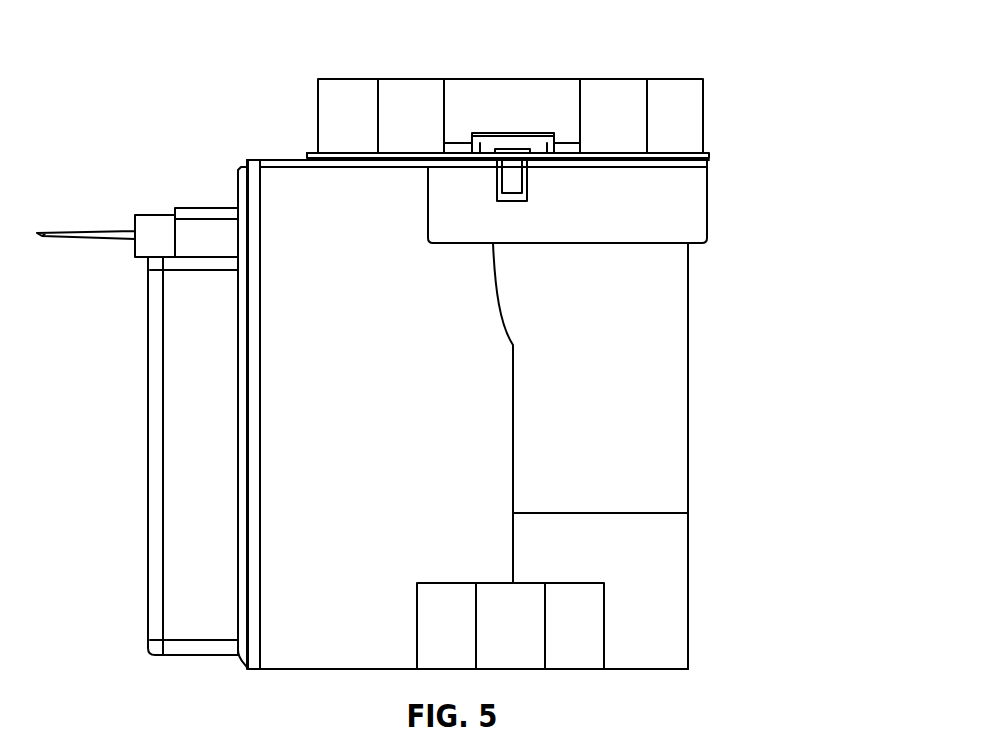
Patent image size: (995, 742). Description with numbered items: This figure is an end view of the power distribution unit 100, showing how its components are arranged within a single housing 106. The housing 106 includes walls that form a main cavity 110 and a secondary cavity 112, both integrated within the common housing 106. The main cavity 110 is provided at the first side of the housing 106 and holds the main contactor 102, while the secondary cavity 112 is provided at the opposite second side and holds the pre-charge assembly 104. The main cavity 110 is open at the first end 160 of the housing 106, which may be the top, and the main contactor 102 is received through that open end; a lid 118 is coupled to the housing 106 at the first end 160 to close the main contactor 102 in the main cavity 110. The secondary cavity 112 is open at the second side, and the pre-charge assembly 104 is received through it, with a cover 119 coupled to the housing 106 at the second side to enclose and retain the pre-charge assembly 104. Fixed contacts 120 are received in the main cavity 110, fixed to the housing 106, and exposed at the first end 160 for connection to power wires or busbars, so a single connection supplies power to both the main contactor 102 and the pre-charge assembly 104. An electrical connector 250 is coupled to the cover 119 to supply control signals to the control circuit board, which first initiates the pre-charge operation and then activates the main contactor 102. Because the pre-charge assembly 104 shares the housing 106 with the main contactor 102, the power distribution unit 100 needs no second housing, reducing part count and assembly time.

The power distribution unit 100 is at (760, 85).
The main contactor 102 is at (655, 332).
The pre-charge assembly 104 is at (198, 501).
The housing 106 is at (670, 452).
The main cavity 110 is at (685, 153).
The secondary cavity 112 is at (260, 372).
The lid 118 is at (632, 80).
The cover 119 is at (148, 340).
The fixed contacts 120 is at (503, 142).
The first end 160 is at (289, 157).
The electrical connector 250 is at (157, 212).